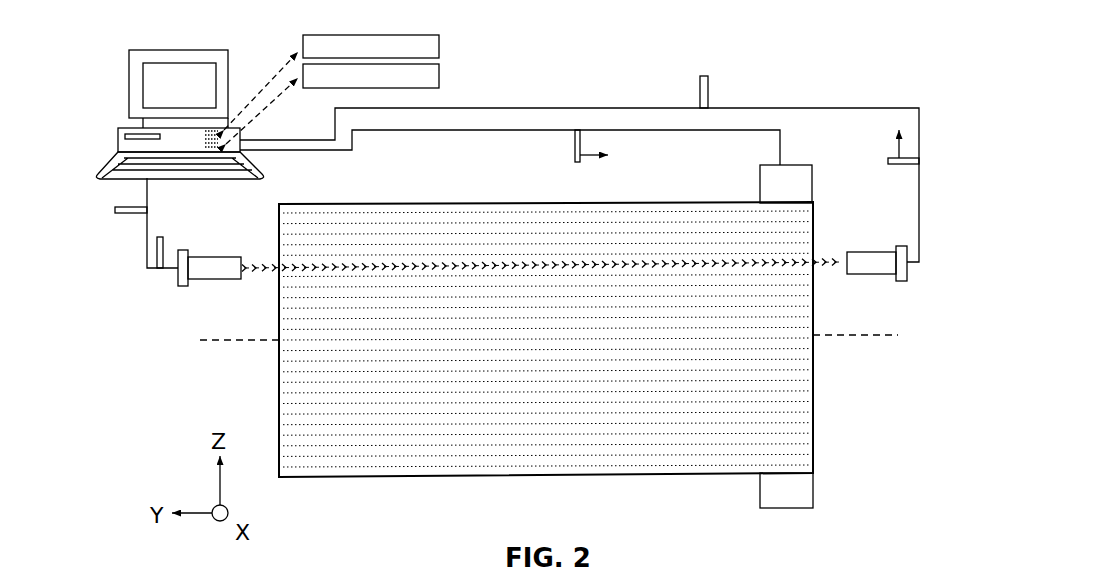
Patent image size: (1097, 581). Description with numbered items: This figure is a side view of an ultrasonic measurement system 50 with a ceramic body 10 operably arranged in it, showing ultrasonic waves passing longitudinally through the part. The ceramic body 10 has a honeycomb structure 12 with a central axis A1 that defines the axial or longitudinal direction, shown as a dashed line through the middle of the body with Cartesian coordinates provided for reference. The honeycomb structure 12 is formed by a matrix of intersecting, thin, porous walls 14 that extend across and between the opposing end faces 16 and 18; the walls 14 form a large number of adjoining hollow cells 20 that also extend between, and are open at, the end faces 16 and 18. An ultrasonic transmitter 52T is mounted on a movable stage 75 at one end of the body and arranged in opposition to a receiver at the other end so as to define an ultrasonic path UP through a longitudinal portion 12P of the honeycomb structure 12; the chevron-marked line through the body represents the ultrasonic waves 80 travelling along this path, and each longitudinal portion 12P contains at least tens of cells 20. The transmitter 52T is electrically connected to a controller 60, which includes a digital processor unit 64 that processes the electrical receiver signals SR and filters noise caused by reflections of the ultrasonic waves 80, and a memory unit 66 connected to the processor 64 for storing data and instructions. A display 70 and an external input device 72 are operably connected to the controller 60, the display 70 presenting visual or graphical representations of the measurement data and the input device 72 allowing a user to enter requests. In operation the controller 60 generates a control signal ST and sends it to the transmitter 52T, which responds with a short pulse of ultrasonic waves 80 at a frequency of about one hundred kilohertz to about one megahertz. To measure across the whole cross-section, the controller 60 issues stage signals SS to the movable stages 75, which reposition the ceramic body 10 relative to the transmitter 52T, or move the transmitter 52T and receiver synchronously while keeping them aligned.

The ceramic body 10 is at (502, 314).
The honeycomb structure 12 is at (466, 204).
The longitudinal portion 12P is at (772, 276).
The walls 14 is at (508, 220).
The end face 16 is at (280, 418).
The end face 18 is at (813, 422).
The cells 20 is at (280, 367).
The ultrasonic measurement system 50 is at (817, 59).
The ultrasonic transmitter 52T is at (216, 280).
The controller 60 is at (239, 61).
The digital processor unit 64 is at (439, 42).
The memory unit 66 is at (439, 85).
The display 70 is at (129, 90).
The external input device 72 is at (263, 181).
The movable stage 75 is at (180, 286).
The ultrasonic wave 80 is at (264, 249).
The stage signals SS is at (181, 212).
The receiver signals SR is at (889, 162).
The control signal ST is at (130, 212).
The ultrasonic path UP is at (681, 245).
The central axis A1 is at (864, 336).